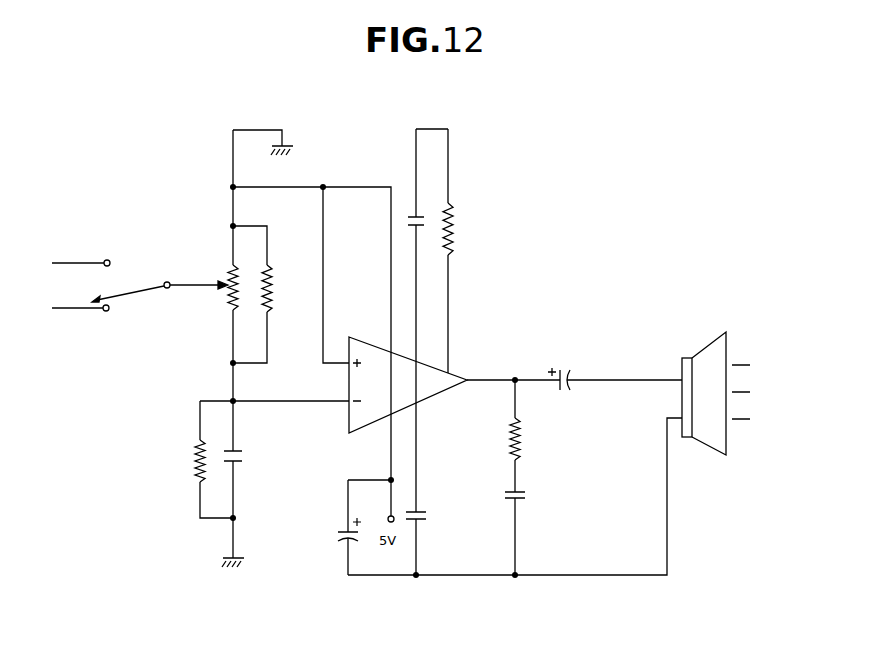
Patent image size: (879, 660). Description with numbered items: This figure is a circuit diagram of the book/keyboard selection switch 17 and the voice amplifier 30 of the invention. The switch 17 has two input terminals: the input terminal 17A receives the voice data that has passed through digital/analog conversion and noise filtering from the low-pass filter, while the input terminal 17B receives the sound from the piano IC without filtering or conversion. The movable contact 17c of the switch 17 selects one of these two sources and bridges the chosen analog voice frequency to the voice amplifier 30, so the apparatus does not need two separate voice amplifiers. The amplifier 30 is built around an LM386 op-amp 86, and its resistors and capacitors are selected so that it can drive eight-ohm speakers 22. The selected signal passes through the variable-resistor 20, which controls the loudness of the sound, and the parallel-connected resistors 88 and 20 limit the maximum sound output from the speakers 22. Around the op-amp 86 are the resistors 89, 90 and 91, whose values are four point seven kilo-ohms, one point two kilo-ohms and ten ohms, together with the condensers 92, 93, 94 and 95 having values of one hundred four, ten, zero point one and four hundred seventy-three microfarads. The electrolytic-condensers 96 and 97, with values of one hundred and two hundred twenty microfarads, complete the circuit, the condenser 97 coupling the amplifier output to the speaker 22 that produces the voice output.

The book/keyboard selection switch 17 is at (132, 296).
The input terminal 17A is at (76, 250).
The input terminal 17B is at (75, 318).
The switch contact 17c is at (196, 273).
The variable-resistor 20 is at (231, 306).
The speaker 22 is at (705, 362).
The voice amplifier 30 is at (585, 221).
The LM386 op-amp 86 is at (463, 373).
The resistor 88 is at (277, 273).
The resistor 89 is at (192, 483).
The resistor 90 is at (460, 209).
The resistor 91 is at (526, 458).
The condenser 92 is at (243, 451).
The condenser 93 is at (407, 213).
The condenser 94 is at (426, 512).
The condenser 95 is at (527, 488).
The electrolytic-condenser 96 is at (340, 534).
The electrolytic-condenser 97 is at (573, 347).